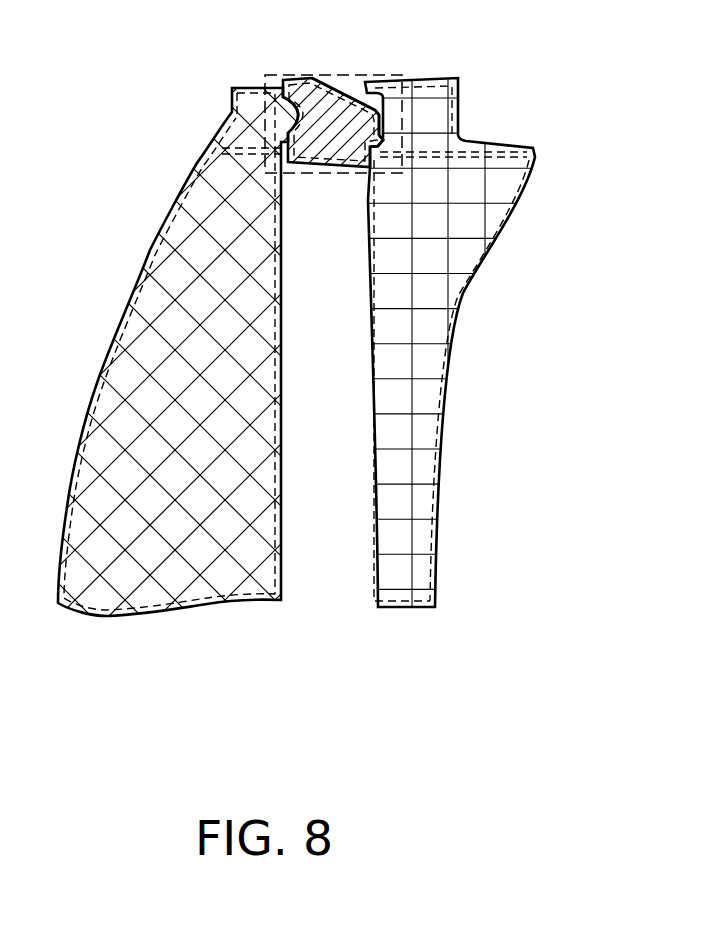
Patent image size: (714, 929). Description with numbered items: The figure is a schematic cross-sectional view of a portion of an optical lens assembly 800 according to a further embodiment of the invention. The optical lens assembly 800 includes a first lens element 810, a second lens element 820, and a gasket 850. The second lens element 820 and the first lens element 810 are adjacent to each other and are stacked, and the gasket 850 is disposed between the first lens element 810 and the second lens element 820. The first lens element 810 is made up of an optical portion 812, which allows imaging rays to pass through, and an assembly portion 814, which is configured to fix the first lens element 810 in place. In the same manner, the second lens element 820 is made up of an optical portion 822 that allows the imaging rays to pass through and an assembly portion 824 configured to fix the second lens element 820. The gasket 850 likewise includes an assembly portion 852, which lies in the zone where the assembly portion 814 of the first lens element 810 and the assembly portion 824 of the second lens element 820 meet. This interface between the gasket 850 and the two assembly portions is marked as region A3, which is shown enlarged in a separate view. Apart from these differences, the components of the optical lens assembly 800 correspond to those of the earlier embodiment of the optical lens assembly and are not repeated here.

The optical lens assembly 800 is at (357, 357).
The first lens element 810 is at (357, 378).
The optical portion 812 is at (168, 207).
The assembly portion 814 is at (220, 127).
The second lens element 820 is at (454, 377).
The optical portion 822 is at (480, 249).
The assembly portion 824 is at (460, 117).
The gasket 850 is at (335, 90).
The assembly portion 852 is at (352, 93).
The region A3 is at (335, 73).